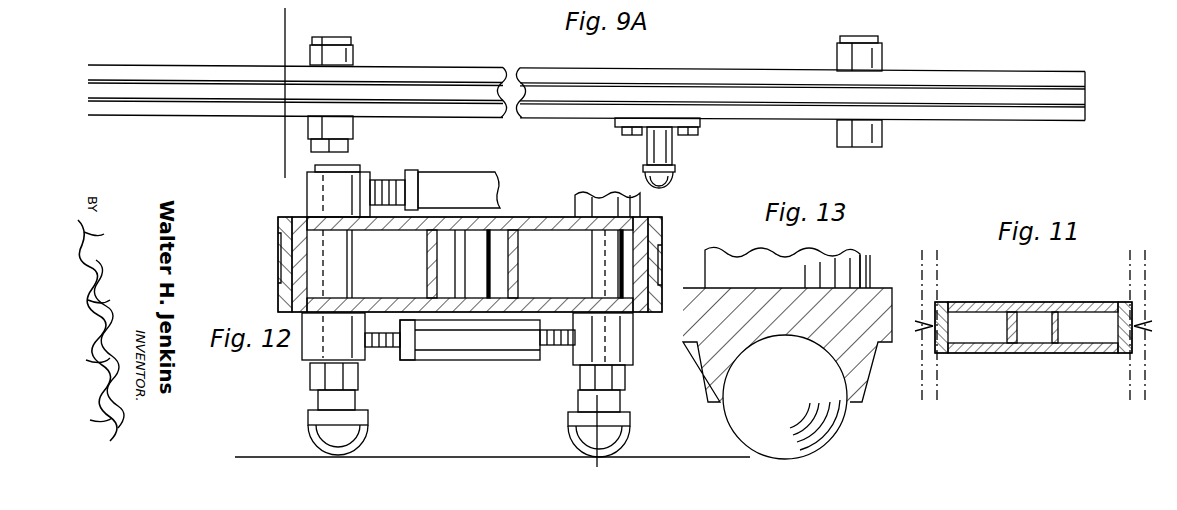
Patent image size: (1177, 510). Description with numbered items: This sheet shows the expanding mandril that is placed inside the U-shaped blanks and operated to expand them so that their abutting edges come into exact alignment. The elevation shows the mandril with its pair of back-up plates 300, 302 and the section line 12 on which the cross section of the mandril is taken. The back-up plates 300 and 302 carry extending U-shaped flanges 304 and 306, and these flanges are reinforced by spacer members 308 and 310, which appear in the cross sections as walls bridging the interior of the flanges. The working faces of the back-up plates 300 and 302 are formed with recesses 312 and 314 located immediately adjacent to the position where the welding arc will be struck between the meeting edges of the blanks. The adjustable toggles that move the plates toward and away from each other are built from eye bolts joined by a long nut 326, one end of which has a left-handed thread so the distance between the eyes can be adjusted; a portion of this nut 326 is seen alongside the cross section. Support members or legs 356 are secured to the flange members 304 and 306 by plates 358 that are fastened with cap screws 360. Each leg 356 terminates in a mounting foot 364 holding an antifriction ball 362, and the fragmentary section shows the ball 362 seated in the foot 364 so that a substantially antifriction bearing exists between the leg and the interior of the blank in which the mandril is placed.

In FIG. 9A, the section line 12— 12 is at (330, 27).
In FIG. 12, the section line 12— 12 is at (610, 405).
In FIG. 12, the back-up plate 300 is at (286, 233).
In FIG. 11, the back-up plate 300 is at (945, 353).
In FIG. 9A, the back-up plate 302 is at (1058, 121).
In FIG. 12, the back-up plate 302 is at (663, 235).
In FIG. 11, the back-up plate 302 is at (1116, 353).
In FIG. 12, the U-shaped flange 304 is at (306, 216).
In FIG. 11, the U-shaped flange 304 is at (985, 291).
In FIG. 12, the U-shaped flange 306 is at (650, 219).
In FIG. 11, the U-shaped flange 306 is at (1090, 297).
In FIG. 12, the reinforcing spacer member 308 is at (428, 256).
In FIG. 11, the reinforcing spacer member 308 is at (1002, 327).
In FIG. 12, the reinforcing spacer member 310 is at (520, 264).
In FIG. 11, the reinforcing spacer member 310 is at (1062, 327).
In FIG. 12, the recess 312 is at (284, 271).
In FIG. 9A, the recess 314 is at (1000, 105).
In FIG. 12, the recess 314 is at (655, 276).
In FIG. 12, the long nut 326 is at (496, 357).
In FIG. 9A, the support member or leg 356 is at (673, 150).
In FIG. 12, the support member or leg 356 is at (369, 378).
In FIG. 13, the support member or leg 356 is at (868, 268).
In FIG. 9A, the plate 358 is at (701, 125).
In FIG. 9A, the cap screw 360 is at (636, 130).
In FIG. 9A, the ball 362 is at (666, 186).
In FIG. 12, the ball 362 is at (372, 451).
In FIG. 13, the ball 362 is at (843, 423).
In FIG. 9A, the mounting foot 364 is at (643, 168).
In FIG. 12, the mounting foot 364 is at (469, 418).
In FIG. 13, the mounting foot 364 is at (710, 362).